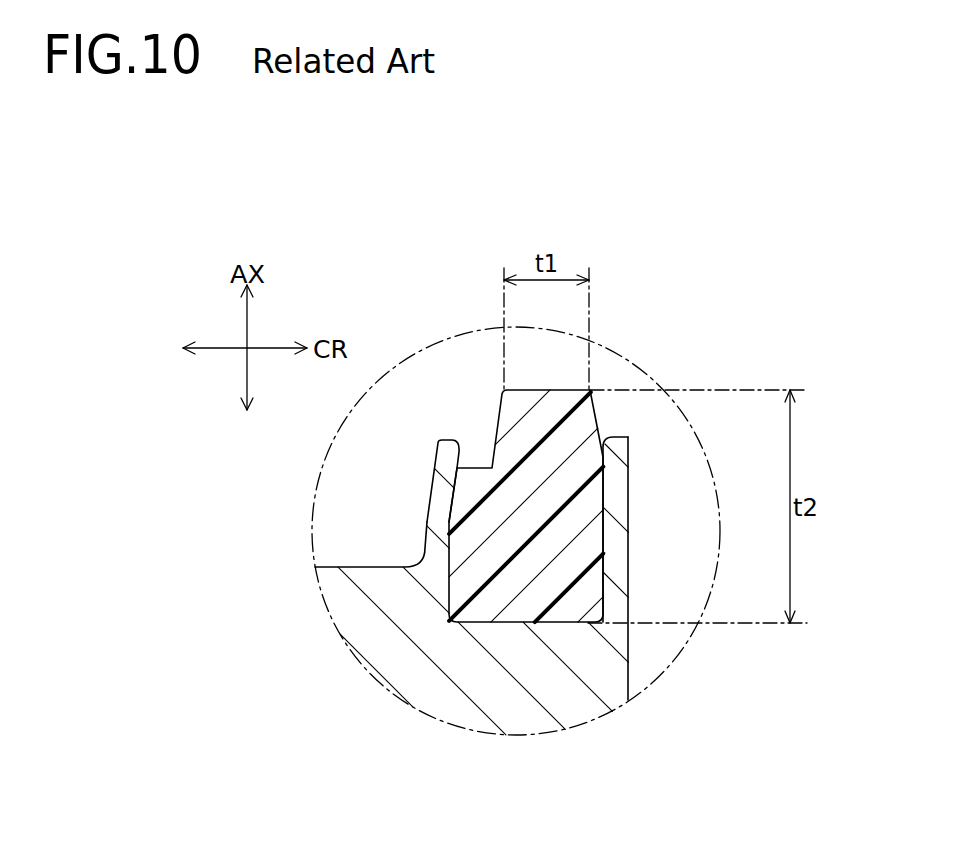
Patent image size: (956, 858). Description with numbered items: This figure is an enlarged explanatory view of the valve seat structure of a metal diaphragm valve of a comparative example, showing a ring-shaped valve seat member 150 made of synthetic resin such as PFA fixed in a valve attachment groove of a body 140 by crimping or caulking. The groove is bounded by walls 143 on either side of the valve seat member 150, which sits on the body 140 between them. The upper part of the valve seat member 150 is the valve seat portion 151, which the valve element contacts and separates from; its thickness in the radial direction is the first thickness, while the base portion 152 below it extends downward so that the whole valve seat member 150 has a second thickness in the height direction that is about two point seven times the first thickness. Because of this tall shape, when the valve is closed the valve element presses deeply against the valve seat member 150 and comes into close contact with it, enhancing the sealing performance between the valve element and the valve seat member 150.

The housing (cylinder body) 140 is at (407, 655).
The groove wall 143 is at (437, 495).
The valve seat member 150 is at (492, 405).
The valve seat portion 151 is at (518, 450).
The base portion of seal 152 is at (527, 557).